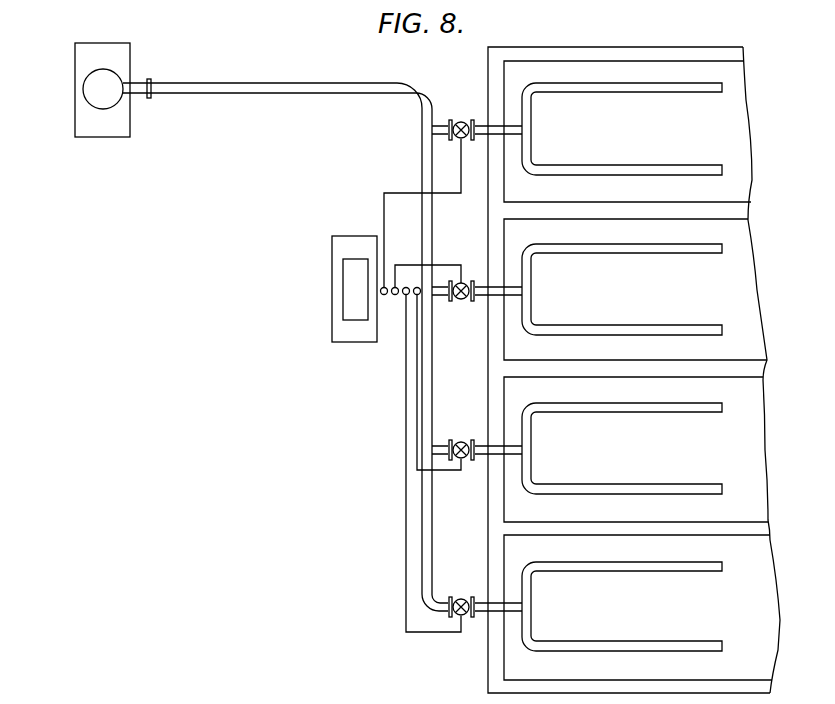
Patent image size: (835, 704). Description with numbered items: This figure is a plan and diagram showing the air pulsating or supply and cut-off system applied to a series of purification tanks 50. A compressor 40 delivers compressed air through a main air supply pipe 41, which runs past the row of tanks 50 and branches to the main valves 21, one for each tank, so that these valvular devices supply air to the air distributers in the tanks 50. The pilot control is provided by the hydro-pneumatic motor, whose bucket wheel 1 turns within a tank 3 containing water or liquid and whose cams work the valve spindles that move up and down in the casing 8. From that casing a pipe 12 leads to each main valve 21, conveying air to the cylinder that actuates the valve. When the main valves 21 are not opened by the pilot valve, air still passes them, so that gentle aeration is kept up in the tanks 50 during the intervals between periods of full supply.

The bucket wheel 1 is at (347, 298).
The tank 3 is at (340, 246).
The casing 8 is at (404, 295).
The pipe 12 is at (404, 193).
The main valves 21 is at (461, 123).
The compressor 40 is at (84, 92).
The main air supply pipe 41 is at (285, 80).
The rooms 50 is at (634, 370).